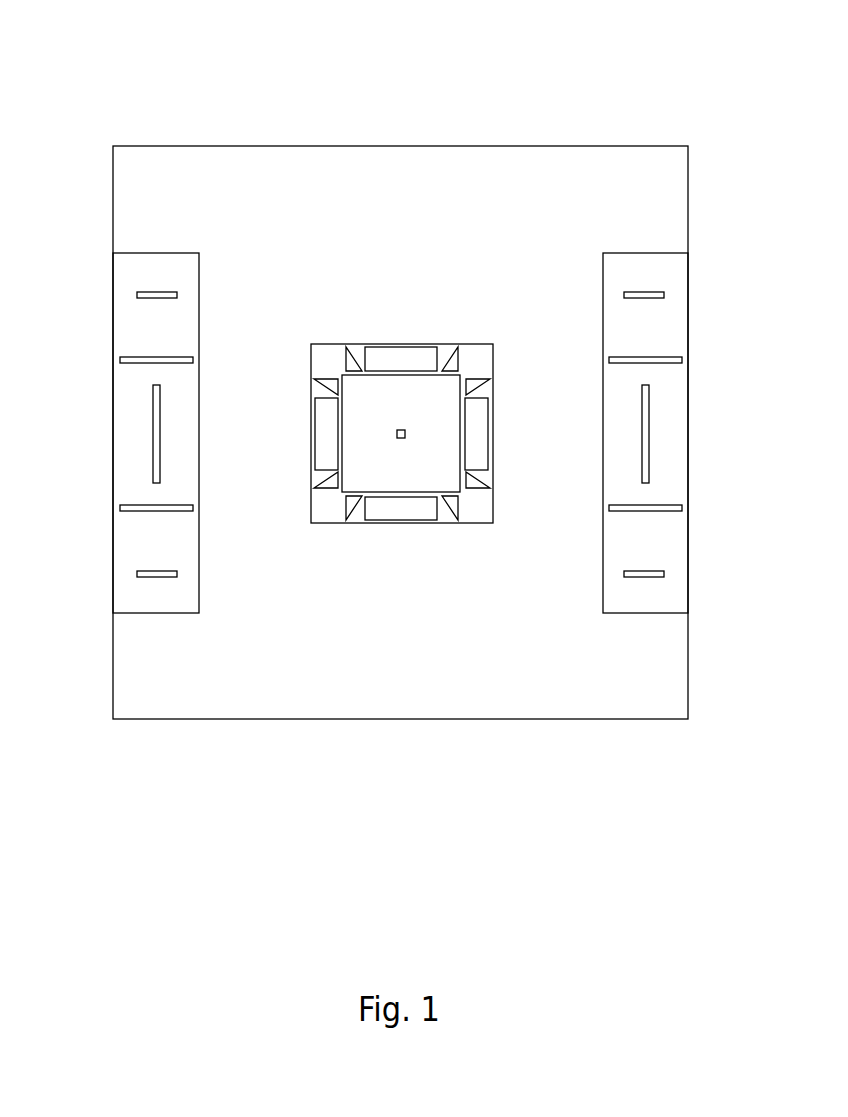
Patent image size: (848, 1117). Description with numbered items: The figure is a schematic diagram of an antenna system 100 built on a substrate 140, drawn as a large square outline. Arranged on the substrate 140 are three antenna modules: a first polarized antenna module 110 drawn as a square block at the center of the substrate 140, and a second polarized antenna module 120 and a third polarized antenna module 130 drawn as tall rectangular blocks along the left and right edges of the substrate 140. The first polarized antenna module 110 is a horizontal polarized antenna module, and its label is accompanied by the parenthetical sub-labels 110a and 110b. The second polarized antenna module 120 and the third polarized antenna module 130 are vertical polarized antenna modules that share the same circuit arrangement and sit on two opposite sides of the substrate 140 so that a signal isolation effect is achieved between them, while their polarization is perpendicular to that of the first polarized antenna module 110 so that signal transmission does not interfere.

The antenna system 100 is at (100, 44).
The first polarized antenna module 110 is at (424, 491).
The inner die region 110a is at (401, 433).
The peripheral die region 110b is at (402, 433).
The second polarized antenna module 120 is at (113, 271).
The third polarized antenna module 130 is at (689, 272).
The substrate 140 is at (689, 672).